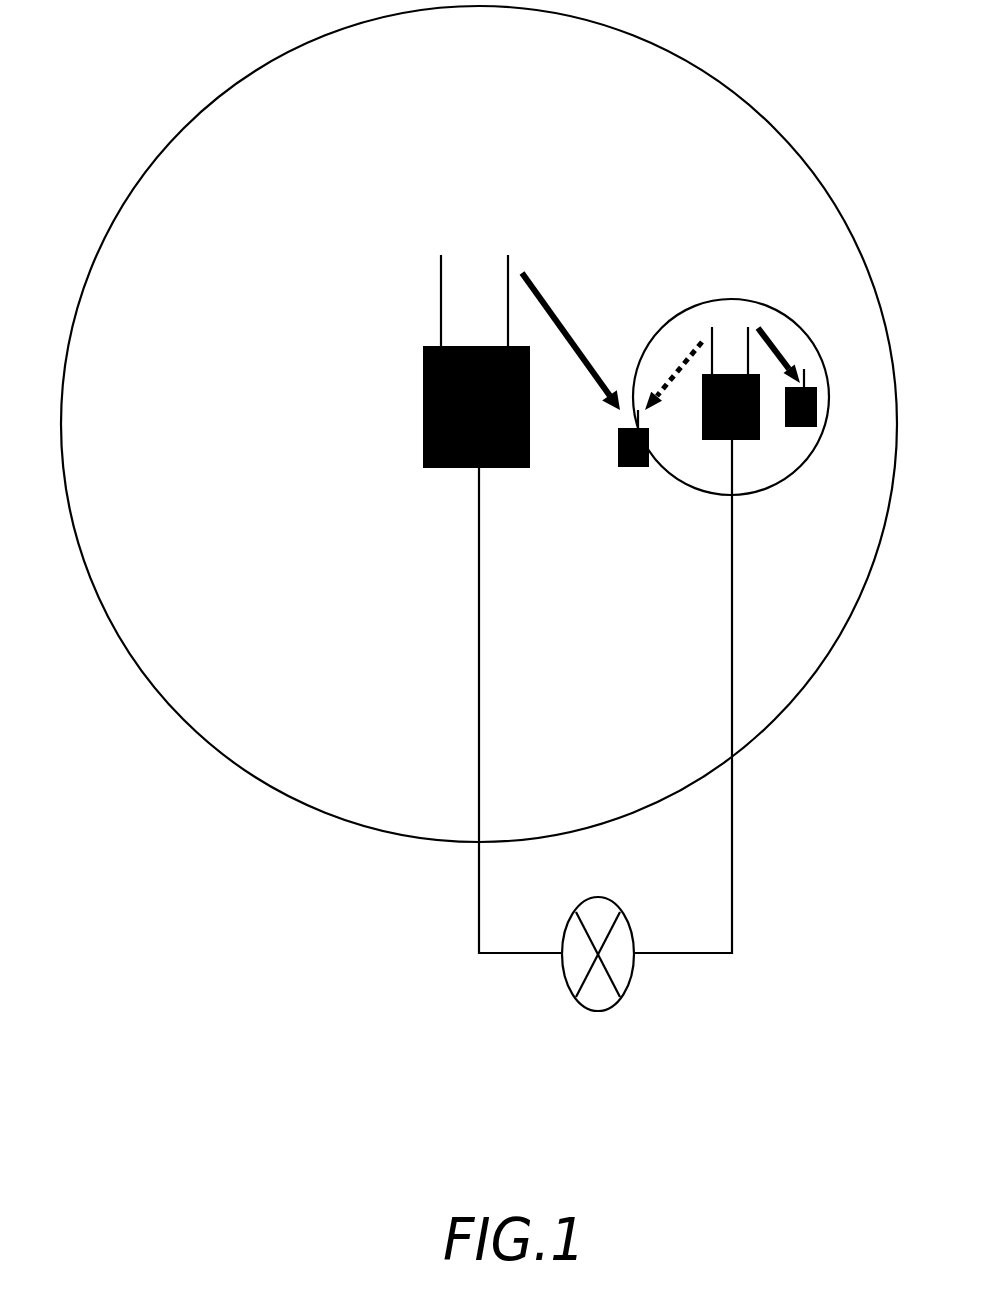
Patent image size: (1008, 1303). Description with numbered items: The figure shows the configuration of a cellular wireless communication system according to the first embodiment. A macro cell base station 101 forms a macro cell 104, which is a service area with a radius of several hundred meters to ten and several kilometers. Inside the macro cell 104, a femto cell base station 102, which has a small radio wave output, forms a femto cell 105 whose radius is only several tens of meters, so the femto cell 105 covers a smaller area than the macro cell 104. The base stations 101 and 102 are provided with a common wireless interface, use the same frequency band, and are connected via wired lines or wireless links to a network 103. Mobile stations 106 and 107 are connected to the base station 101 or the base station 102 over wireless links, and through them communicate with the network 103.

The macro cell base station 101 is at (424, 348).
The femto cell base station 102 is at (745, 440).
The network 103 is at (592, 898).
The macro cell 104 is at (117, 213).
The femto cell 105 is at (731, 299).
The mobile station 106 is at (620, 466).
The mobile station 107 is at (810, 385).